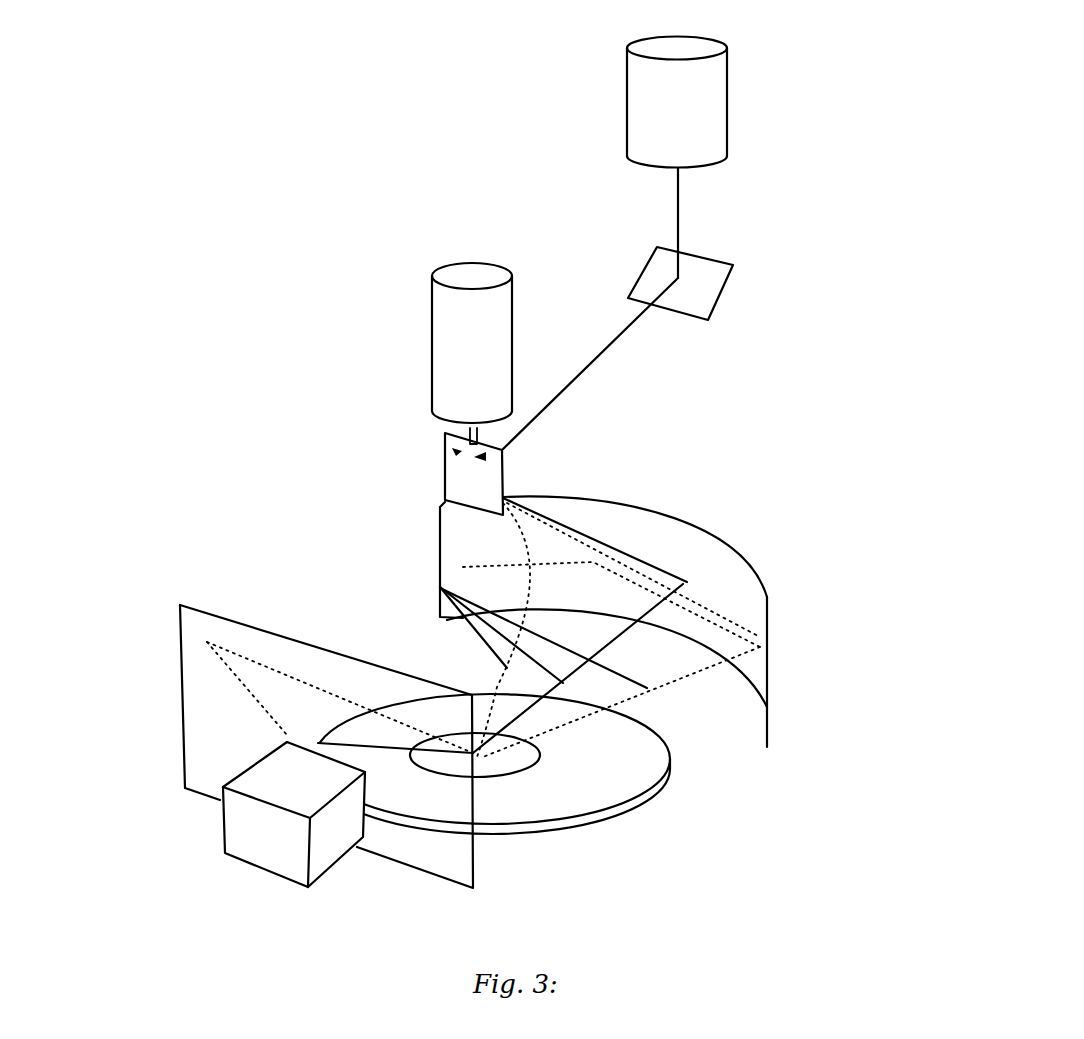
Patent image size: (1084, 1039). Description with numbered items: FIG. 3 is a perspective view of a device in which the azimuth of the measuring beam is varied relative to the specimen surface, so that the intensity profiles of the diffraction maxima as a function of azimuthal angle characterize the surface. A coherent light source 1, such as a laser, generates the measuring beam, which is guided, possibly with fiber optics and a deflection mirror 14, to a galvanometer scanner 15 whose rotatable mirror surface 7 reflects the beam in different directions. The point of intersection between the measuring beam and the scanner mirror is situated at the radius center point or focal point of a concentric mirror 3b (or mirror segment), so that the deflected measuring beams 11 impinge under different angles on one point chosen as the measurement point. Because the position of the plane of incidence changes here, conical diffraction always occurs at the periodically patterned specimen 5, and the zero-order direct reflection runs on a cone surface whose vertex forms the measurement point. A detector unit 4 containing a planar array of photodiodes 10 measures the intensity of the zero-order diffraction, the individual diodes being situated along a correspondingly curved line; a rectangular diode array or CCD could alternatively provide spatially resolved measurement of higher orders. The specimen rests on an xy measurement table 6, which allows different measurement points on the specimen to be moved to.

The light source 1 is at (712, 90).
The deflection mirror 14 is at (713, 303).
The galvanometer scanner 15 is at (445, 347).
The rotatable mirror surface 7 is at (447, 482).
The concentric mirror 3b is at (743, 587).
The measuring beams 11 is at (440, 587).
The planar array of photodiodes 10 is at (212, 665).
The xy measurement table 6 is at (623, 795).
The specimen 5 is at (520, 750).
The detector unit 4 is at (273, 852).